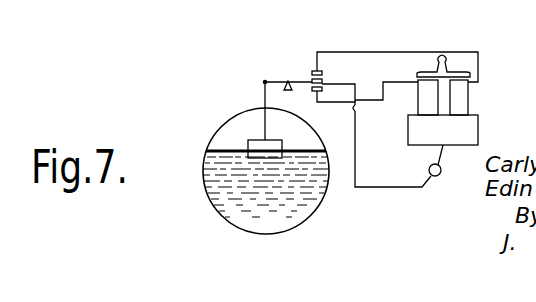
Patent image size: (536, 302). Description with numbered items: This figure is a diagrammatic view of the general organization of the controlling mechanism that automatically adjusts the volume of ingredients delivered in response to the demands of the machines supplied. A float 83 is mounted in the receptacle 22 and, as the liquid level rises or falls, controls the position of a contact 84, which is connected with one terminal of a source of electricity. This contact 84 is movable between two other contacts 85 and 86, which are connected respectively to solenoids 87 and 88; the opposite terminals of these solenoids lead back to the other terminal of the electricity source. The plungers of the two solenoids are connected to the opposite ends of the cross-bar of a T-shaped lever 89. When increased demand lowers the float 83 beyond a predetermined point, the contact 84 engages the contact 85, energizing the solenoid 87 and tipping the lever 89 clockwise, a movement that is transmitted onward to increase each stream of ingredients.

The receptacle 22 is at (234, 221).
The float 83 is at (248, 145).
The contact 84 is at (311, 80).
The contact 85 is at (322, 73).
The contact 86 is at (330, 90).
The solenoid 87 is at (468, 100).
The solenoid 88 is at (418, 99).
The T-shaped lever 89 is at (444, 63).